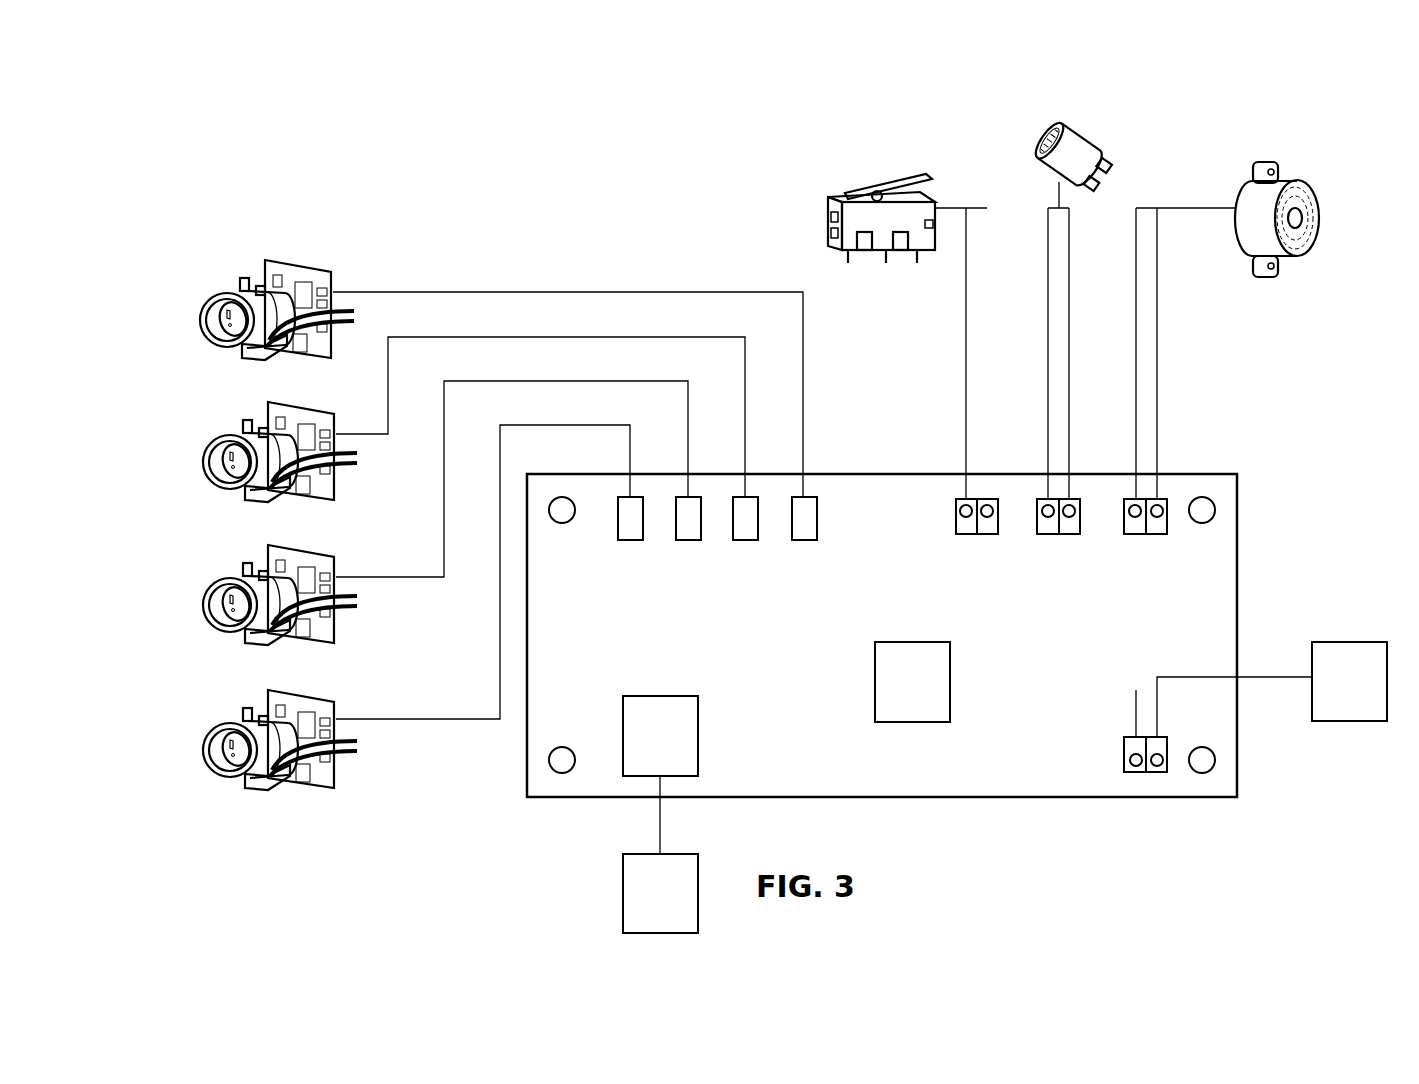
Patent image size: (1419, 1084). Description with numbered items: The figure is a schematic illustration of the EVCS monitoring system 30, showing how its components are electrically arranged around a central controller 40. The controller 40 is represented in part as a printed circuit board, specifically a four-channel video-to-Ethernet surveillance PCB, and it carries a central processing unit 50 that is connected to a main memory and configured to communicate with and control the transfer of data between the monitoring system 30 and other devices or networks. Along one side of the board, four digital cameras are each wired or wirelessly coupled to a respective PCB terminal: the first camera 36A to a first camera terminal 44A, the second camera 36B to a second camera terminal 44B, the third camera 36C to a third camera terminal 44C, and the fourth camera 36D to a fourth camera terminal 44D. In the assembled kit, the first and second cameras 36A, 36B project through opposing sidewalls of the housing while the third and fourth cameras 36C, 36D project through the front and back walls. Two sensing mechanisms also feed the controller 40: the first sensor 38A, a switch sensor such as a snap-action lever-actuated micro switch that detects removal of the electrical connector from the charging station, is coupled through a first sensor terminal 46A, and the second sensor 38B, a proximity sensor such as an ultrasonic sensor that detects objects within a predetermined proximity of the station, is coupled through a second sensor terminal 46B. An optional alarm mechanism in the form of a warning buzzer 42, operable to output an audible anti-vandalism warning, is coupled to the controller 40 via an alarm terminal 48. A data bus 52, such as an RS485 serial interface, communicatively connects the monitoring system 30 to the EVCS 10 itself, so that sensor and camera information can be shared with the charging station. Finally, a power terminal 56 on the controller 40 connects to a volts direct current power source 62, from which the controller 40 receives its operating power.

The EVCS monitoring system 30 is at (362, 177).
The first digital camera 36A is at (233, 723).
The second digital camera 36B is at (233, 578).
The third digital camera 36C is at (233, 435).
The fourth digital camera 36D is at (230, 293).
The first sensor 38A is at (870, 185).
The second sensor 38B is at (1080, 150).
The warning buzzer 42 is at (1285, 180).
The controller 40 is at (1238, 548).
The first camera terminal 44A is at (643, 500).
The second camera terminal 44B is at (701, 500).
The third camera terminal 44C is at (758, 500).
The fourth camera terminal 44D is at (817, 500).
The first sensor terminal 46A is at (998, 505).
The second sensor terminal 46B is at (1080, 505).
The alarm terminal 48 is at (1167, 505).
The central processing unit 50 is at (912, 682).
The data bus 52 is at (660, 736).
The power terminal 56 is at (1124, 763).
The power source 62 is at (1272, 689).
The EVCS 10 is at (660, 854).